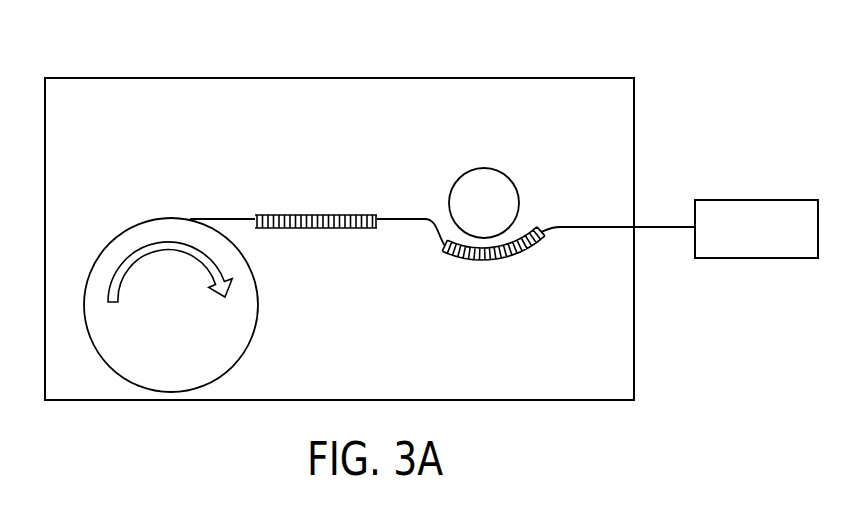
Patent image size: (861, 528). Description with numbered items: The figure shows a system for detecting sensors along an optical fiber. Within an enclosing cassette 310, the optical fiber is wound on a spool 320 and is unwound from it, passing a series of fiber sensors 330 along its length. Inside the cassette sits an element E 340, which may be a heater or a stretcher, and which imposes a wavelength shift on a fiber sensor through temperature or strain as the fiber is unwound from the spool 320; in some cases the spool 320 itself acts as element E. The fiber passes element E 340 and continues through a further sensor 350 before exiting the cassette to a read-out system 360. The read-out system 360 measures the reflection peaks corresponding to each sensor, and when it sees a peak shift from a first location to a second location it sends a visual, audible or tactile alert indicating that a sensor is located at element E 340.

The sensor system housing 310 is at (156, 78).
The spool 320 is at (138, 222).
The sensors 330 is at (306, 152).
The element E 340 is at (478, 170).
The second sensor segment Sj 350 is at (501, 320).
The read-out system 360 is at (746, 200).